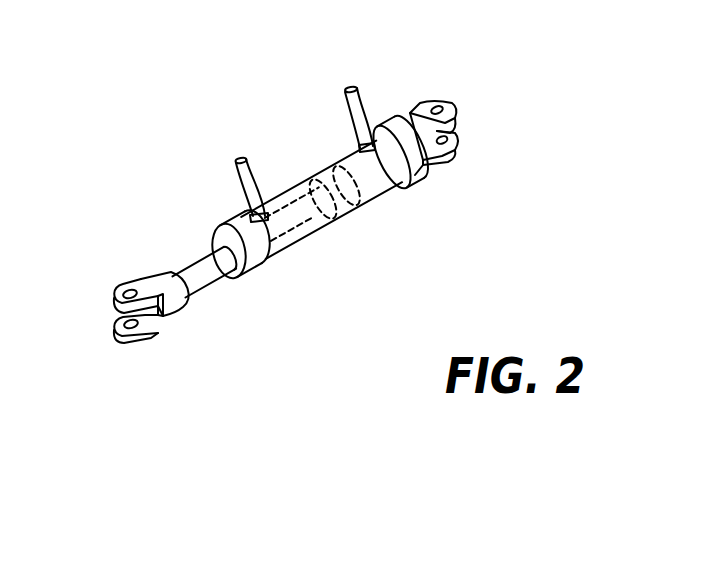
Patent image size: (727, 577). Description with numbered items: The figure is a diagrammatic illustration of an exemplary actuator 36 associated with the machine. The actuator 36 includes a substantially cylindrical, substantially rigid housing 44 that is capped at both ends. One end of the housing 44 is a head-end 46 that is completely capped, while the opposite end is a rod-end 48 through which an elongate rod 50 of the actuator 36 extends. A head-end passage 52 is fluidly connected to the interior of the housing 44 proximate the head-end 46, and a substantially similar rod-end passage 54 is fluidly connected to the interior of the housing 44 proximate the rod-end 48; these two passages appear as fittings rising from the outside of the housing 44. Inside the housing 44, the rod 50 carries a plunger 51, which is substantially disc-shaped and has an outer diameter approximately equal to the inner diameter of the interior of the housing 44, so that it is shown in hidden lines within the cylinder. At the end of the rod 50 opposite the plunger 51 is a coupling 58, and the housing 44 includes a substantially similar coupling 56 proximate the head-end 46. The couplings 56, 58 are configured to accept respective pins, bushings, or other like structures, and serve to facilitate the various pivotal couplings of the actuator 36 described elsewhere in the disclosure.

The actuator 36 is at (300, 222).
The housing 44 is at (290, 186).
The head-end 46 is at (426, 190).
The rod-end 48 is at (259, 285).
The rod 50 is at (208, 288).
The plunger 51 is at (342, 215).
The head-end passage 52 is at (360, 92).
The rod-end passage 54 is at (257, 178).
The coupling 56 is at (457, 156).
The coupling 58 is at (123, 338).